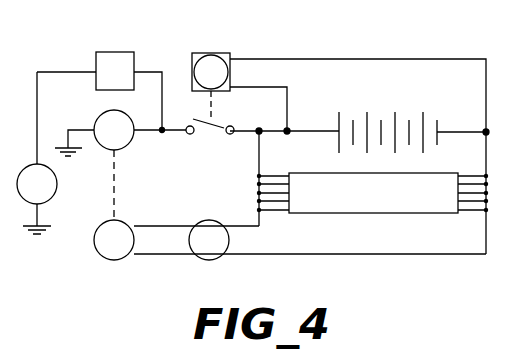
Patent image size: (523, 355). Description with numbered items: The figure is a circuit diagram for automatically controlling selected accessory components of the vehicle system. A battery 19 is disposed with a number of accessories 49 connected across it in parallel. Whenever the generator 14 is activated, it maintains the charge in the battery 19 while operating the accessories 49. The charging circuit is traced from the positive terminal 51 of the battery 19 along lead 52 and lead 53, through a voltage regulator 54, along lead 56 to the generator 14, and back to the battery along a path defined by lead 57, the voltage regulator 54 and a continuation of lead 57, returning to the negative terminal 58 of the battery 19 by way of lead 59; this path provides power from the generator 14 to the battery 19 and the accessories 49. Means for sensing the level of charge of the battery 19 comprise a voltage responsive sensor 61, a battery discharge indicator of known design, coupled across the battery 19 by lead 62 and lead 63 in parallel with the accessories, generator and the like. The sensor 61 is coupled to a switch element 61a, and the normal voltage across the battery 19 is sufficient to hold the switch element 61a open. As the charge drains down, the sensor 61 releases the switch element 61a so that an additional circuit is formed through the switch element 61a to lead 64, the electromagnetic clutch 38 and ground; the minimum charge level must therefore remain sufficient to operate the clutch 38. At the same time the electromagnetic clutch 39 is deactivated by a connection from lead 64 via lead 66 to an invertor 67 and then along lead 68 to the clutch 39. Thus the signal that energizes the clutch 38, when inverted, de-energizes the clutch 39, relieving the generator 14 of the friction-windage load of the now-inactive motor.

The lead 68 is at (66, 72).
The invertor 67 is at (117, 52).
The lead 66 is at (162, 72).
The electromagnetic clutch 38 is at (98, 116).
The electromagnetic clutch 39 is at (57, 184).
The generator 14 is at (106, 258).
The lead 56 is at (165, 226).
The lead 57 is at (166, 254).
The voltage regulator 54 is at (223, 256).
The lead 53 is at (246, 224).
The lead 52 is at (262, 129).
The positive terminal 51 is at (318, 130).
The battery 19 is at (368, 126).
The negative terminal 58 is at (438, 128).
The lead 59 is at (459, 131).
The lead 62 is at (414, 59).
The voltage responsive sensor 61 is at (214, 53).
The lead 63 is at (276, 87).
The lead 64 is at (174, 132).
The switch element 61a is at (218, 132).
The accessories 49 is at (352, 214).